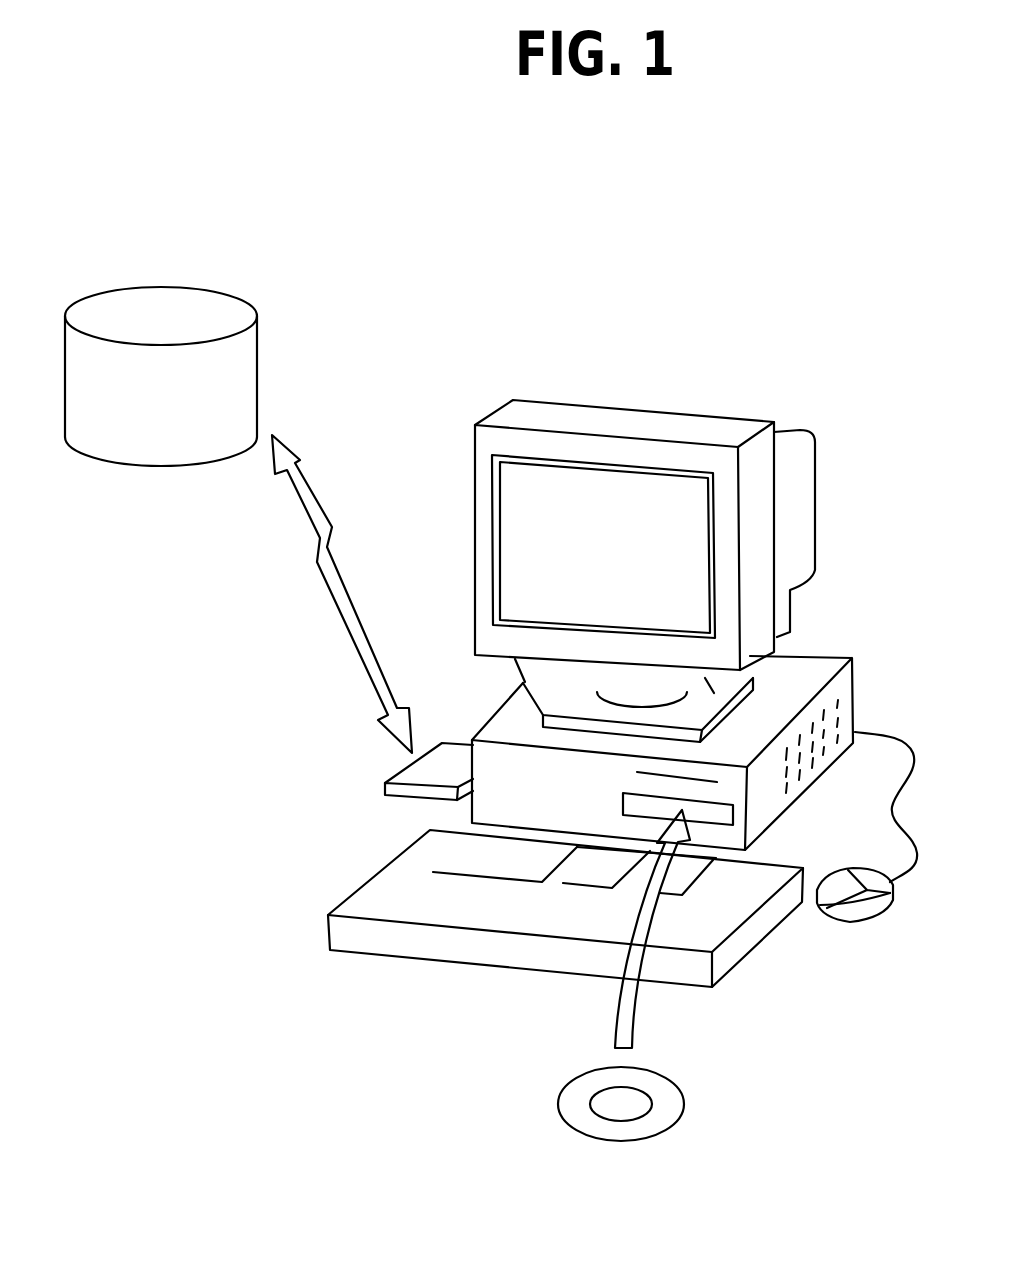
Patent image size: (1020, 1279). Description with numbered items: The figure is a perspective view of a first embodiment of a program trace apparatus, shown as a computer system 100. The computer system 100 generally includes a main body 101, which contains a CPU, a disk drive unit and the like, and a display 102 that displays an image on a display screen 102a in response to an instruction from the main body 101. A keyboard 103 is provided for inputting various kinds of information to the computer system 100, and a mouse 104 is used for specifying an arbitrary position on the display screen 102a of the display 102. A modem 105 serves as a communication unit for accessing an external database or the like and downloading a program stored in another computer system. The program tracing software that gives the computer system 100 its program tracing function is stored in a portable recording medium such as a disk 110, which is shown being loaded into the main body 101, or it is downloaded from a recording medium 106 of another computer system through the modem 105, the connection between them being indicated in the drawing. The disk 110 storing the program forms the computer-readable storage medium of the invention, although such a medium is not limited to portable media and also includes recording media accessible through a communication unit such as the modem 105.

The computer system 100 is at (790, 331).
The main body 101 is at (835, 655).
The display 102 is at (750, 421).
The display screen 102a is at (558, 490).
The keyboard 103 is at (382, 884).
The mouse 104 is at (855, 908).
The modem 105 is at (397, 770).
The recording medium 106 is at (228, 297).
The disk 110 is at (683, 1100).